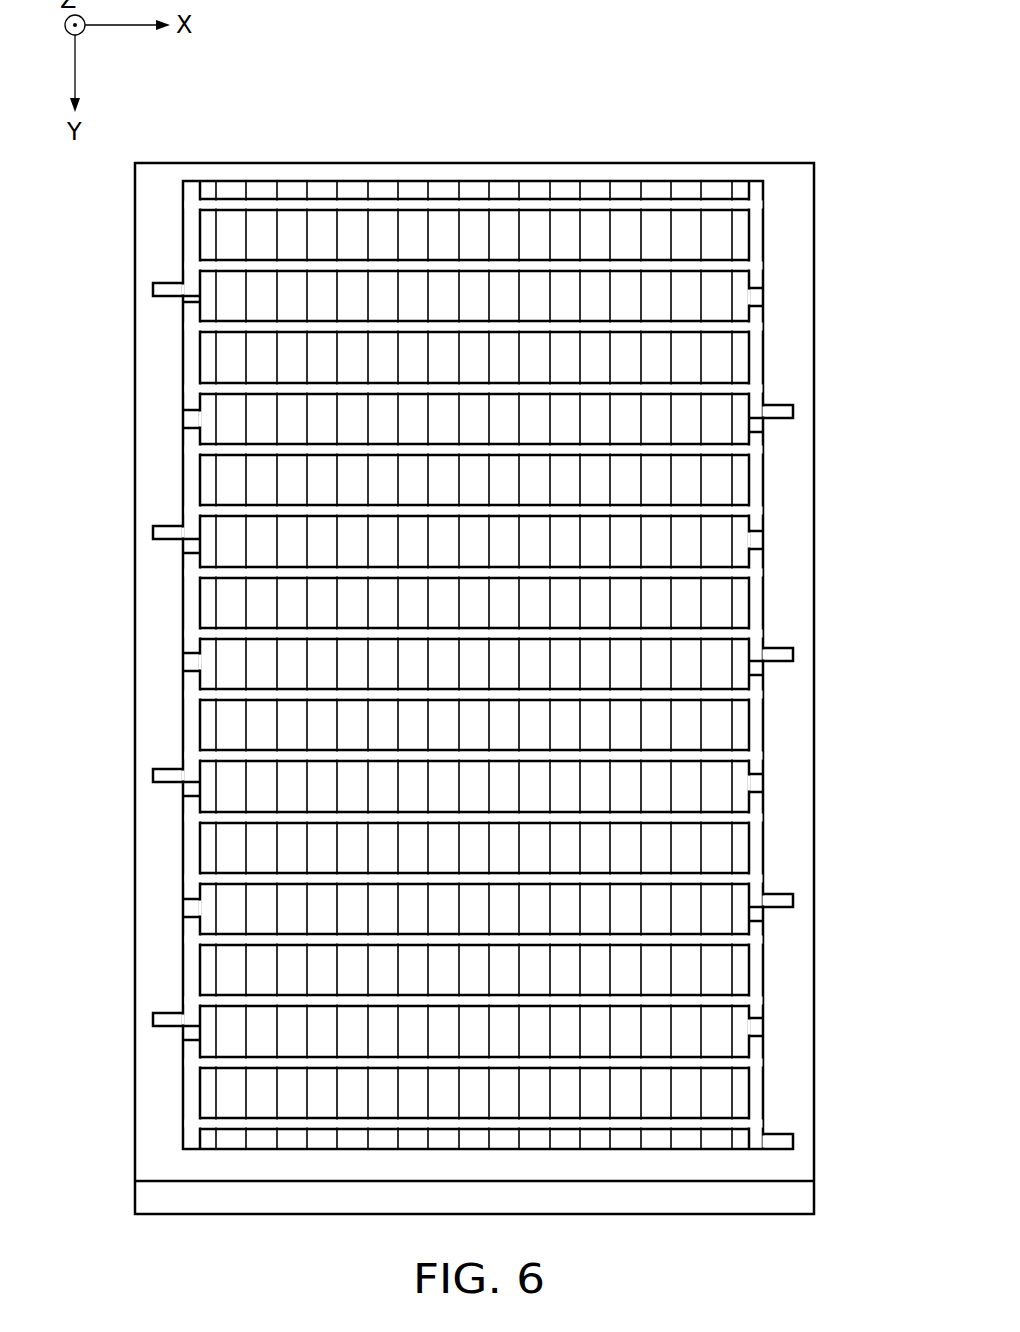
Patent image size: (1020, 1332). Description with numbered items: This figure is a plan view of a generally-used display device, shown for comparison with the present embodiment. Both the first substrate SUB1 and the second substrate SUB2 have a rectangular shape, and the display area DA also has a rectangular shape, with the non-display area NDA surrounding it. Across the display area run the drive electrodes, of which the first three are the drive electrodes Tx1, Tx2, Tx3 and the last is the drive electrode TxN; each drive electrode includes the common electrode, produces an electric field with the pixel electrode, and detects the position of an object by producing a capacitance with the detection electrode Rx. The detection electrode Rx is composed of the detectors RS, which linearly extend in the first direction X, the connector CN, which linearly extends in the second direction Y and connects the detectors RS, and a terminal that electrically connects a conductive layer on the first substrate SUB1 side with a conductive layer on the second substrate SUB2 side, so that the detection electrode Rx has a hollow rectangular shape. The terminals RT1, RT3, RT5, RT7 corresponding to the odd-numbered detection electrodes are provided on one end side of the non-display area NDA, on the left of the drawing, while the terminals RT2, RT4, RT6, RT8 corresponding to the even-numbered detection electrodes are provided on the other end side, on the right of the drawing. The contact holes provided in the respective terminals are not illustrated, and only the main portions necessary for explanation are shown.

The detection electrode Rx is at (170, 204).
The detector RS is at (480, 265).
The connector CN is at (757, 202).
The display area DA is at (770, 292).
The non-display area NDA is at (789, 346).
The terminal RT1 is at (168, 290).
The terminal RT2 is at (778, 411).
The terminal RT3 is at (168, 532).
The terminal RT4 is at (778, 654).
The terminal RT5 is at (168, 775).
The terminal RT6 is at (778, 900).
The terminal RT7 is at (168, 1019).
The terminal RT8 is at (778, 1141).
The first substrate SUB1 is at (158, 1197).
The second substrate SUB2 is at (158, 1121).
The drive electrode Tx1 is at (210, 188).
The drive electrode Tx2 is at (237, 188).
The drive electrode Tx3 is at (263, 188).
The drive electrode TxN is at (740, 188).